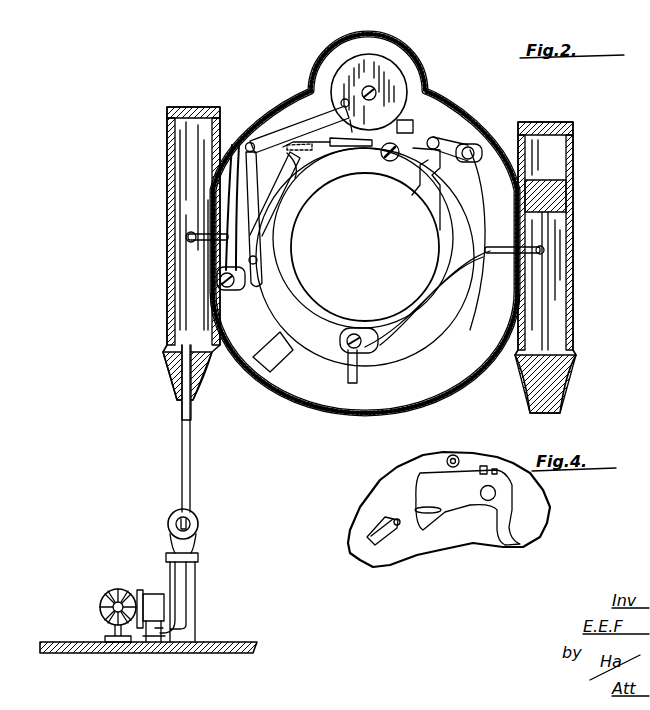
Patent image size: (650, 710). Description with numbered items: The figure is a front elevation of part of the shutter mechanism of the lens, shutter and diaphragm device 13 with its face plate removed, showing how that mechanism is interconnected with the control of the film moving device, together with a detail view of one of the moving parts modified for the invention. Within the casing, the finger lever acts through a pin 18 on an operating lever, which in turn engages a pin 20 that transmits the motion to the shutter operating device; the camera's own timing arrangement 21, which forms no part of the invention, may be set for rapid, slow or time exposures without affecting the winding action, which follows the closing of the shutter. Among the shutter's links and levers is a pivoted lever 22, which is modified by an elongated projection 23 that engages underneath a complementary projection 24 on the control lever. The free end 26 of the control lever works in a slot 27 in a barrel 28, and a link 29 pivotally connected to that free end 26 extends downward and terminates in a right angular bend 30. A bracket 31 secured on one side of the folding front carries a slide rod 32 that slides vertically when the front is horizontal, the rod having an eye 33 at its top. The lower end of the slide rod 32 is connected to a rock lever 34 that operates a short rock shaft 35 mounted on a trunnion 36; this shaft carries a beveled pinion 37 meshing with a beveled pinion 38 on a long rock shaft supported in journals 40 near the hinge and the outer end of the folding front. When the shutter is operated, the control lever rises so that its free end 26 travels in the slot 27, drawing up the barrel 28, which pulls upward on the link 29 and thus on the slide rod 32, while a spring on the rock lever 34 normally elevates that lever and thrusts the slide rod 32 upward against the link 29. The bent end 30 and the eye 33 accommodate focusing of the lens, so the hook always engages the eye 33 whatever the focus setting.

In FIG. 2, the lens, shutter and diaphragm device 13 is at (498, 128).
In FIG. 4, the lens, shutter and diaphragm device 13 is at (552, 512).
In FIG. 2, the pin 18 is at (163, 612).
In FIG. 2, the pin 20 is at (437, 140).
In FIG. 2, the timing arrangement 21 is at (398, 80).
In FIG. 2, the pivoted lever 22 is at (316, 150).
In FIG. 4, the pivoted lever 22 is at (462, 507).
In FIG. 2, the elongated projection 23 is at (292, 160).
In FIG. 4, the elongated projection 23 is at (416, 518).
In FIG. 2, the complementary projection 24 is at (368, 135).
In FIG. 2, the free end 26 is at (186, 236).
In FIG. 2, the slot 27 is at (205, 192).
In FIG. 2, the barrel 28 is at (170, 255).
In FIG. 2, the link 29 is at (185, 315).
In FIG. 2, the right angular bend 30 is at (176, 518).
In FIG. 2, the bracket 31 is at (199, 558).
In FIG. 2, the slide rod 32 is at (190, 583).
In FIG. 2, the eye 33 is at (199, 524).
In FIG. 2, the rock lever 34 is at (165, 598).
In FIG. 2, the short rock shaft 35 is at (150, 645).
In FIG. 2, the trunnion 36 is at (160, 642).
In FIG. 2, the beveled pinion 37 is at (139, 590).
In FIG. 2, the beveled pinion 38 is at (104, 594).
In FIG. 2, the journals 40 is at (106, 633).